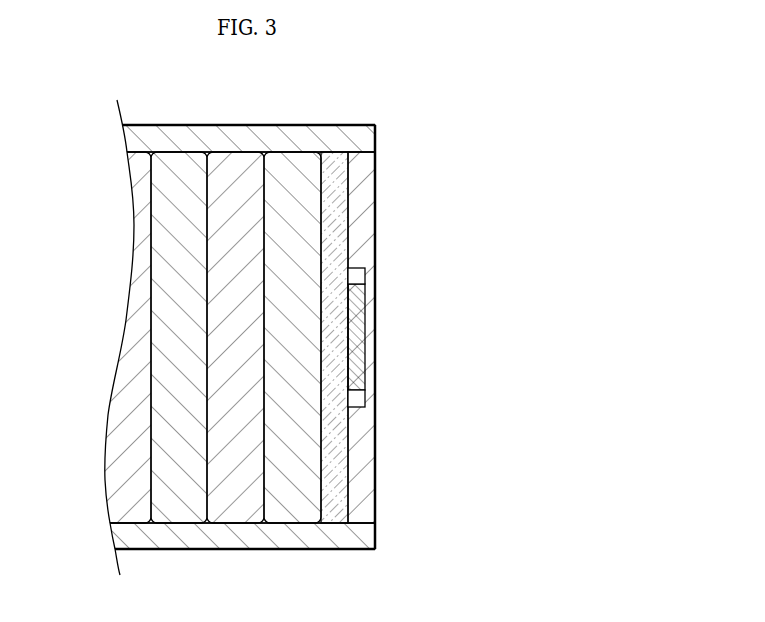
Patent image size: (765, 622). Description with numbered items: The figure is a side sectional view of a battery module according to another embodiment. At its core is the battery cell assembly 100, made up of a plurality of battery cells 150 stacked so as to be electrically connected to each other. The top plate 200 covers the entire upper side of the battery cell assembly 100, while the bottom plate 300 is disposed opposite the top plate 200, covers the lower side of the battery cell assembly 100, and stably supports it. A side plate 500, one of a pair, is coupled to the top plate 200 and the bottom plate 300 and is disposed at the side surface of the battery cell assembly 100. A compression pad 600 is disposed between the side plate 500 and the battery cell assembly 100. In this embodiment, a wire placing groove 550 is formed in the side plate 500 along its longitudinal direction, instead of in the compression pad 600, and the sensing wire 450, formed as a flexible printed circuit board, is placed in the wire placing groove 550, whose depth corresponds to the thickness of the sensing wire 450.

The battery cell assembly 100 is at (183, 337).
The battery cell 150 is at (112, 415).
The top plate 200 is at (274, 125).
The bottom plate 300 is at (275, 549).
The sensing wire 450 is at (357, 330).
The side plate 500 is at (375, 198).
The wire placing groove 550 is at (365, 397).
The compression pad 600 is at (340, 242).